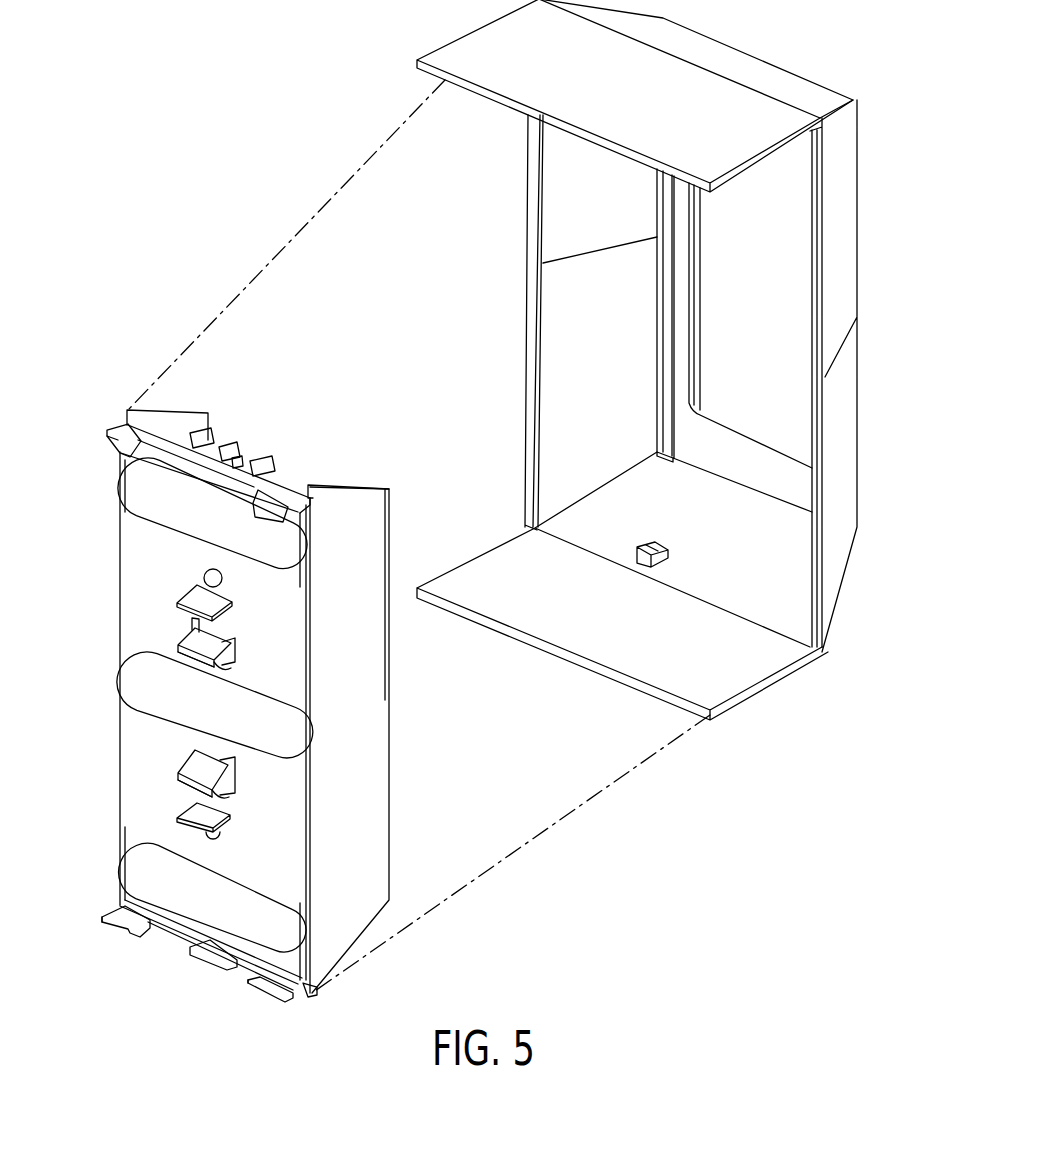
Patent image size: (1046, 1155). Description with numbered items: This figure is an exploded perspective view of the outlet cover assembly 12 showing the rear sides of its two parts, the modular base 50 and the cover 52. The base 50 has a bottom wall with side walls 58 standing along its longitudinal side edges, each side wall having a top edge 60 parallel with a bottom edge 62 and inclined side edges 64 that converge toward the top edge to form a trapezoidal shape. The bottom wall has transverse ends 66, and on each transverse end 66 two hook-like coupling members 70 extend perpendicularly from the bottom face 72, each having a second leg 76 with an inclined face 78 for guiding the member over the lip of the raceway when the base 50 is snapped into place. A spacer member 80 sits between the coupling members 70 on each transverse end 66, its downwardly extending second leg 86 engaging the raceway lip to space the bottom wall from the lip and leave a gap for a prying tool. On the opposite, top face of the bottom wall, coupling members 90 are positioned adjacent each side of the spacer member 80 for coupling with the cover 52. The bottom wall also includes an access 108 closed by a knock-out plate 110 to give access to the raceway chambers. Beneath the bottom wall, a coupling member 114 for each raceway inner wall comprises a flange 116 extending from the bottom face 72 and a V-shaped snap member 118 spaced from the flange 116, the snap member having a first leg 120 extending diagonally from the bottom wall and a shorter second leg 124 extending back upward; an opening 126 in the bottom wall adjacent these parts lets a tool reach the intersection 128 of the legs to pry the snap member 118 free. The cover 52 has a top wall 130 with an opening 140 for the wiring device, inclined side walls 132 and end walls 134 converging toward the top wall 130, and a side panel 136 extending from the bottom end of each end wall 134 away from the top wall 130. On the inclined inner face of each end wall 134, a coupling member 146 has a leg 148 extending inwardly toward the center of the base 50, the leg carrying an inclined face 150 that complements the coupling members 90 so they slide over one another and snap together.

The outlet cover assembly 12 is at (238, 590).
The modular base 50 is at (238, 703).
The cover 52 is at (658, 376).
The side walls 58 is at (380, 718).
The top edge 60 is at (388, 690).
The bottom edge 62 is at (310, 715).
The inclined side edges 64 is at (337, 485).
The transverse ends 66 is at (150, 430).
The coupling member 70 is at (97, 442).
The bottom face 72 is at (298, 882).
The second leg 76 is at (127, 447).
The inclined face 78 is at (120, 442).
The spacer member 80 is at (234, 459).
The second leg 86 is at (240, 452).
The coupling members 90 is at (192, 430).
The access 108 is at (173, 531).
The knock-out plate 110 is at (150, 671).
The coupling member 114 is at (175, 612).
The flange 116 is at (215, 601).
The V-shaped snap member 118 is at (175, 642).
The first leg 120 is at (224, 666).
The second leg 124 is at (211, 642).
The opening 126 is at (236, 645).
The intersection 128 is at (196, 661).
The top wall 130 is at (764, 93).
The side walls 132 is at (837, 560).
The end walls 134 is at (827, 99).
The side panel 136 is at (482, 37).
The opening 140 is at (800, 228).
The coupling member 146 is at (669, 551).
The leg 148 is at (645, 564).
The inclined face 150 is at (643, 546).